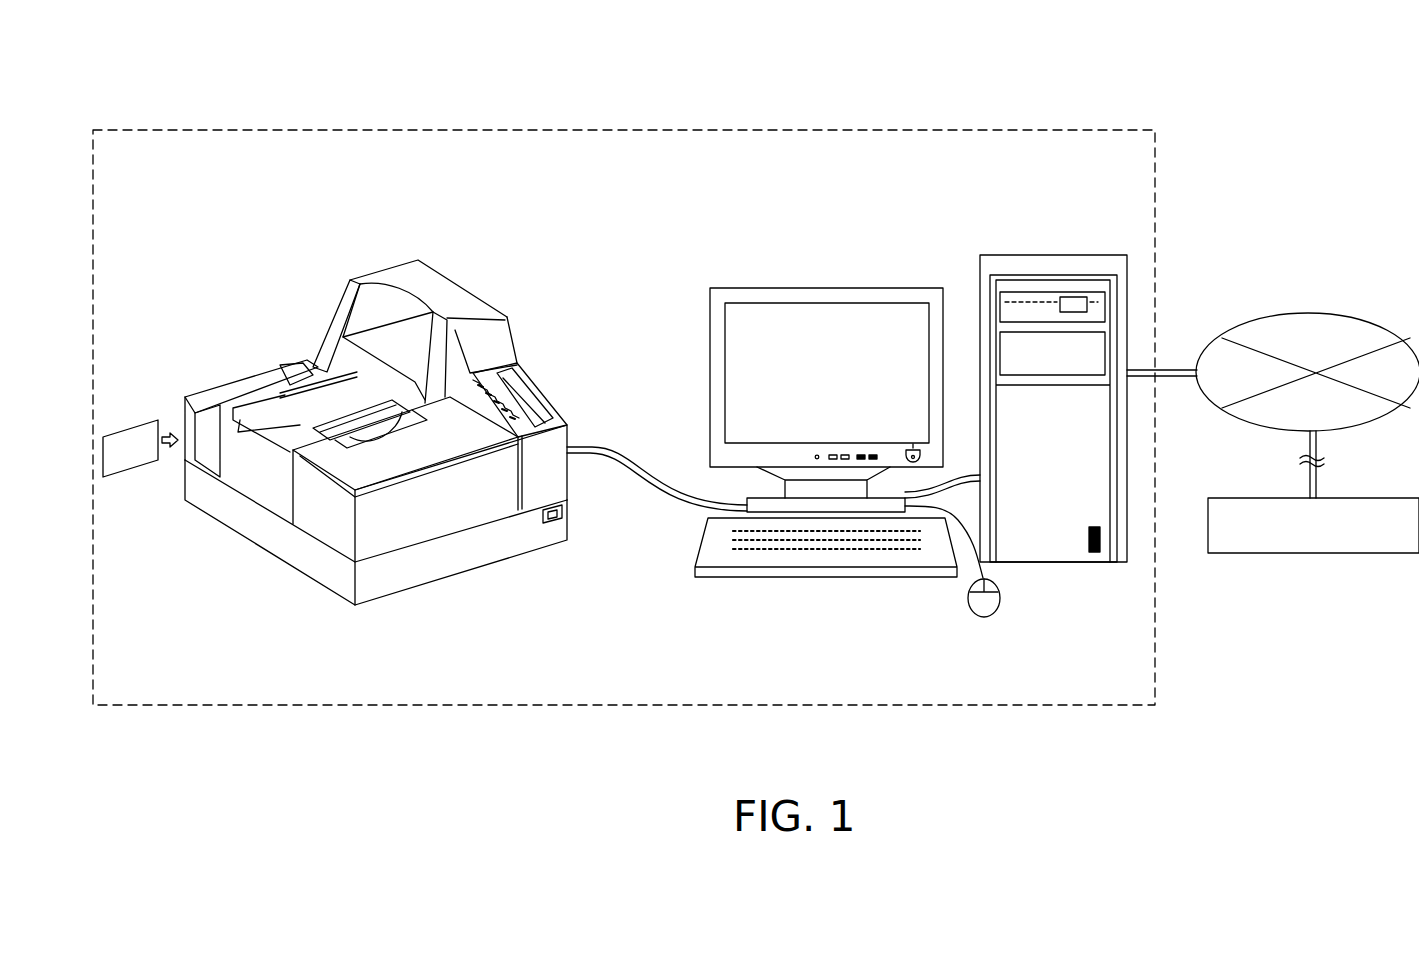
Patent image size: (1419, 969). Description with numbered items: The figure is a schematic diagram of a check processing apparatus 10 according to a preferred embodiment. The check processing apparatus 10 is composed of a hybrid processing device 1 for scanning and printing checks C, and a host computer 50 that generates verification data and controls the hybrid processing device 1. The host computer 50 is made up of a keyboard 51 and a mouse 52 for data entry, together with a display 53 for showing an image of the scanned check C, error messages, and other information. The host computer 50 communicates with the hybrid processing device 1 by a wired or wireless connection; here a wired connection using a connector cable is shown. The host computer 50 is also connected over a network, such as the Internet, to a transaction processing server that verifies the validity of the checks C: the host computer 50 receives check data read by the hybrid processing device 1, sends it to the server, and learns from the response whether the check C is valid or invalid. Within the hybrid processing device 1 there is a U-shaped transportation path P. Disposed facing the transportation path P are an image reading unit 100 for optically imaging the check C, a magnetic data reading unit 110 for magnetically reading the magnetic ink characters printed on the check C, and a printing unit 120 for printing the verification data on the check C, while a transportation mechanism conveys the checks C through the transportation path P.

The check processing apparatus 10 is at (737, 130).
The hybrid processing device 1 is at (358, 230).
The image reading unit 100 is at (405, 296).
The magnetic data reading unit 110 is at (427, 300).
The printing unit 120 is at (395, 425).
The host computer 50 is at (855, 273).
The keyboard 51 is at (698, 545).
The mouse 52 is at (1003, 596).
The display 53 is at (773, 303).
The transportation path P is at (303, 430).
The check C is at (133, 420).